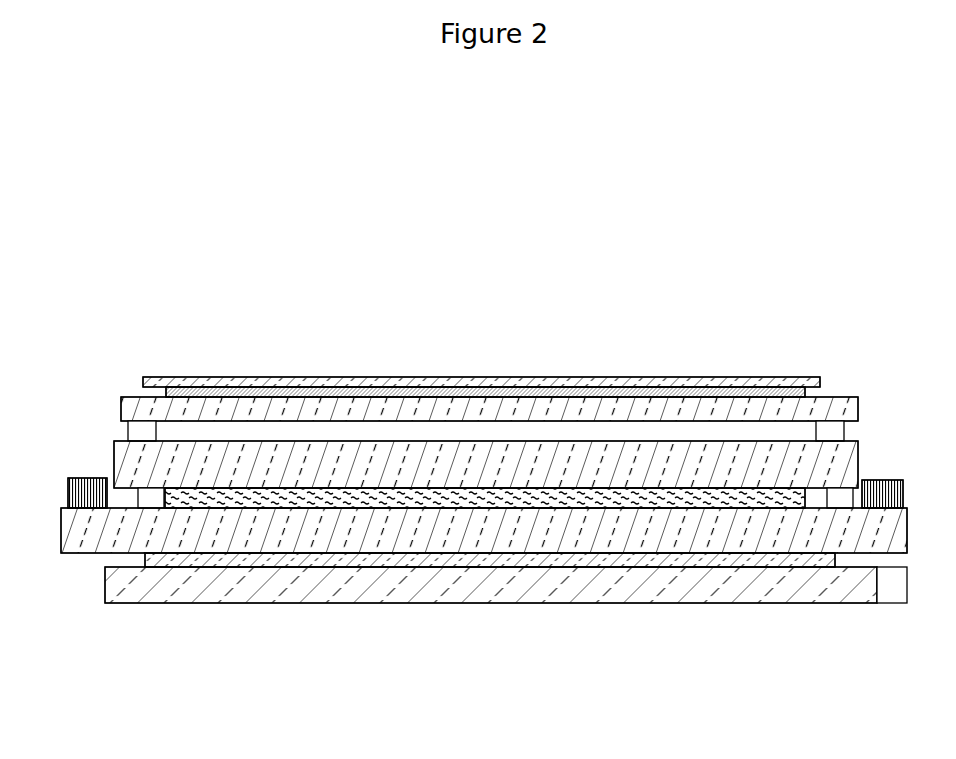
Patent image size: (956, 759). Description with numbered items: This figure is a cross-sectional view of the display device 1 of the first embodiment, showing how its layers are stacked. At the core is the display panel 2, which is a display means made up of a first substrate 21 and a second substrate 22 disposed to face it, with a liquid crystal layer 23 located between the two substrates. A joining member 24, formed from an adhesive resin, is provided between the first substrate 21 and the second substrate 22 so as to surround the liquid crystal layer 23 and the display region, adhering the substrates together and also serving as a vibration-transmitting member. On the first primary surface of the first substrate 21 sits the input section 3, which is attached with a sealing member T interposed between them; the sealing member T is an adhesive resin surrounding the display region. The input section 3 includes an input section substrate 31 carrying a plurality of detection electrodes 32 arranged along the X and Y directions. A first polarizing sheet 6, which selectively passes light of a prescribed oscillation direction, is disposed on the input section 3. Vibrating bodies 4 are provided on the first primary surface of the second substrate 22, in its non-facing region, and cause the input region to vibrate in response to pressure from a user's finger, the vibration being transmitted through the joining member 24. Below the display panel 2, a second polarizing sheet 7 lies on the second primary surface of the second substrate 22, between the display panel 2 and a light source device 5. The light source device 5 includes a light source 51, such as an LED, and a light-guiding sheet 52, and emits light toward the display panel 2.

The display device 1 is at (498, 212).
The display panel 2 is at (53, 438).
The input section 3 is at (110, 368).
The vibrating body 4 is at (83, 501).
The light source device 5 is at (892, 666).
The first polarizing sheet 6 is at (345, 397).
The second polarizing sheet 7 is at (267, 555).
The first substrate 21 is at (558, 468).
The second substrate 22 is at (355, 534).
The liquid crystal layer 23 is at (737, 494).
The joining member 24 is at (153, 499).
The input section substrate 31 is at (259, 396).
The detection electrode 32 is at (462, 380).
The light source 51 is at (890, 598).
The light-guiding sheet 52 is at (843, 587).
The sealing member T is at (133, 418).